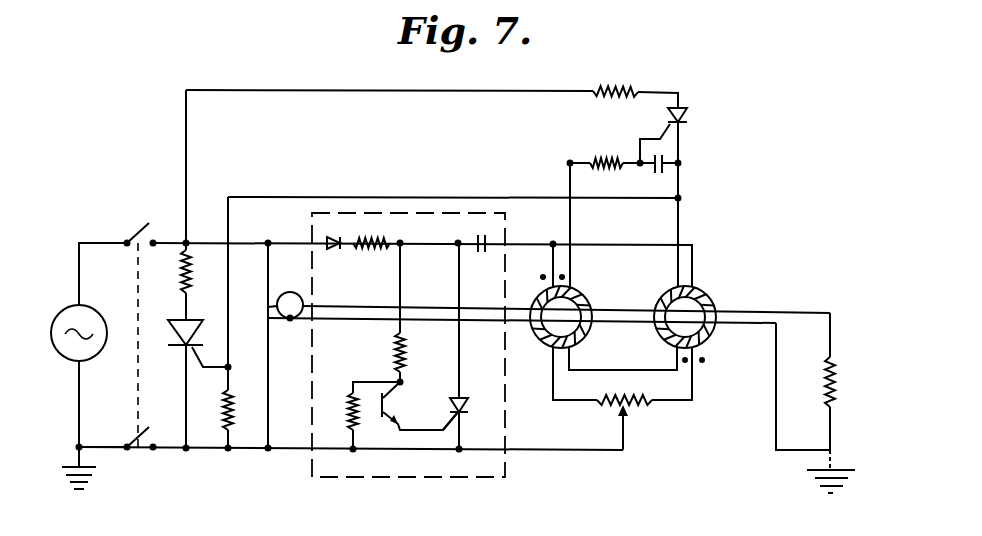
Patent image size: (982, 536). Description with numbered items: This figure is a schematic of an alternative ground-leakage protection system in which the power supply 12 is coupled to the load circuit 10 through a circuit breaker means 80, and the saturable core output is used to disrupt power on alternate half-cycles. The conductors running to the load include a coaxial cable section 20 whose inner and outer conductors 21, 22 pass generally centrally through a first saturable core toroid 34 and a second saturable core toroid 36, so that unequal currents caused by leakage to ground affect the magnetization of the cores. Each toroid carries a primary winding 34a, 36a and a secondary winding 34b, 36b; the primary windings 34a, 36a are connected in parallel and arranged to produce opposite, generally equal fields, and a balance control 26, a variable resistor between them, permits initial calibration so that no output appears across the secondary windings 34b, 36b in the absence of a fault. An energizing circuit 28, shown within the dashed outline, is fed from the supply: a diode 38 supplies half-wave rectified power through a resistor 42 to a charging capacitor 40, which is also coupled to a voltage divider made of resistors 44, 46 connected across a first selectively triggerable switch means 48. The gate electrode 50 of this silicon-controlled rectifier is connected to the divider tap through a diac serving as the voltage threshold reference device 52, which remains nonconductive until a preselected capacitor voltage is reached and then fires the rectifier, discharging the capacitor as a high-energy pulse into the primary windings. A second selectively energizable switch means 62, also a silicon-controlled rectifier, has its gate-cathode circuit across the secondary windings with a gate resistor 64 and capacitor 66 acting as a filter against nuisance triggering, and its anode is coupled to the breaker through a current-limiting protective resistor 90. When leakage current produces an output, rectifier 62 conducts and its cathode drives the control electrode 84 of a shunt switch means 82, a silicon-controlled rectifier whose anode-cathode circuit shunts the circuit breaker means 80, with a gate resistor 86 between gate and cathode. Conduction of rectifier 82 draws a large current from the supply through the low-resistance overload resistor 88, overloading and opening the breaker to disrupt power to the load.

The load circuit 10 is at (835, 385).
The power supply 12 is at (63, 306).
The coaxial cable section 20 is at (293, 291).
The inner conductor 21 is at (636, 312).
The outer conductor 22 is at (632, 322).
The balance control 26 is at (645, 403).
The energizing circuit 28 is at (307, 228).
The first saturable core toroid 34 is at (540, 297).
The primary winding of first toroid 34a is at (550, 342).
The secondary winding of first toroid 34b is at (616, 278).
The second saturable core toroid 36 is at (708, 297).
The primary winding of second toroid 36a is at (762, 374).
The secondary winding of second toroid 36b is at (668, 295).
The diode 38 is at (335, 252).
The charging capacitor 40 is at (475, 240).
The resistor 42 is at (375, 254).
The resistor 44 is at (394, 355).
The resistor 46 is at (348, 415).
The first selectively triggerable switch means 48 is at (480, 392).
The gate electrode 50 is at (447, 420).
The voltage threshold reference device 52 is at (403, 398).
The second selectively energizable switch means 62 is at (688, 112).
The gate resistor 64 is at (606, 159).
The capacitor 66 is at (650, 171).
The circuit breaker means 80 is at (130, 233).
The shunt switch means 82 is at (170, 324).
The control electrode 84 is at (202, 367).
The gate resistor 86 is at (227, 418).
The overload resistor 88 is at (181, 274).
The current-limiting protective resistor 90 is at (622, 88).